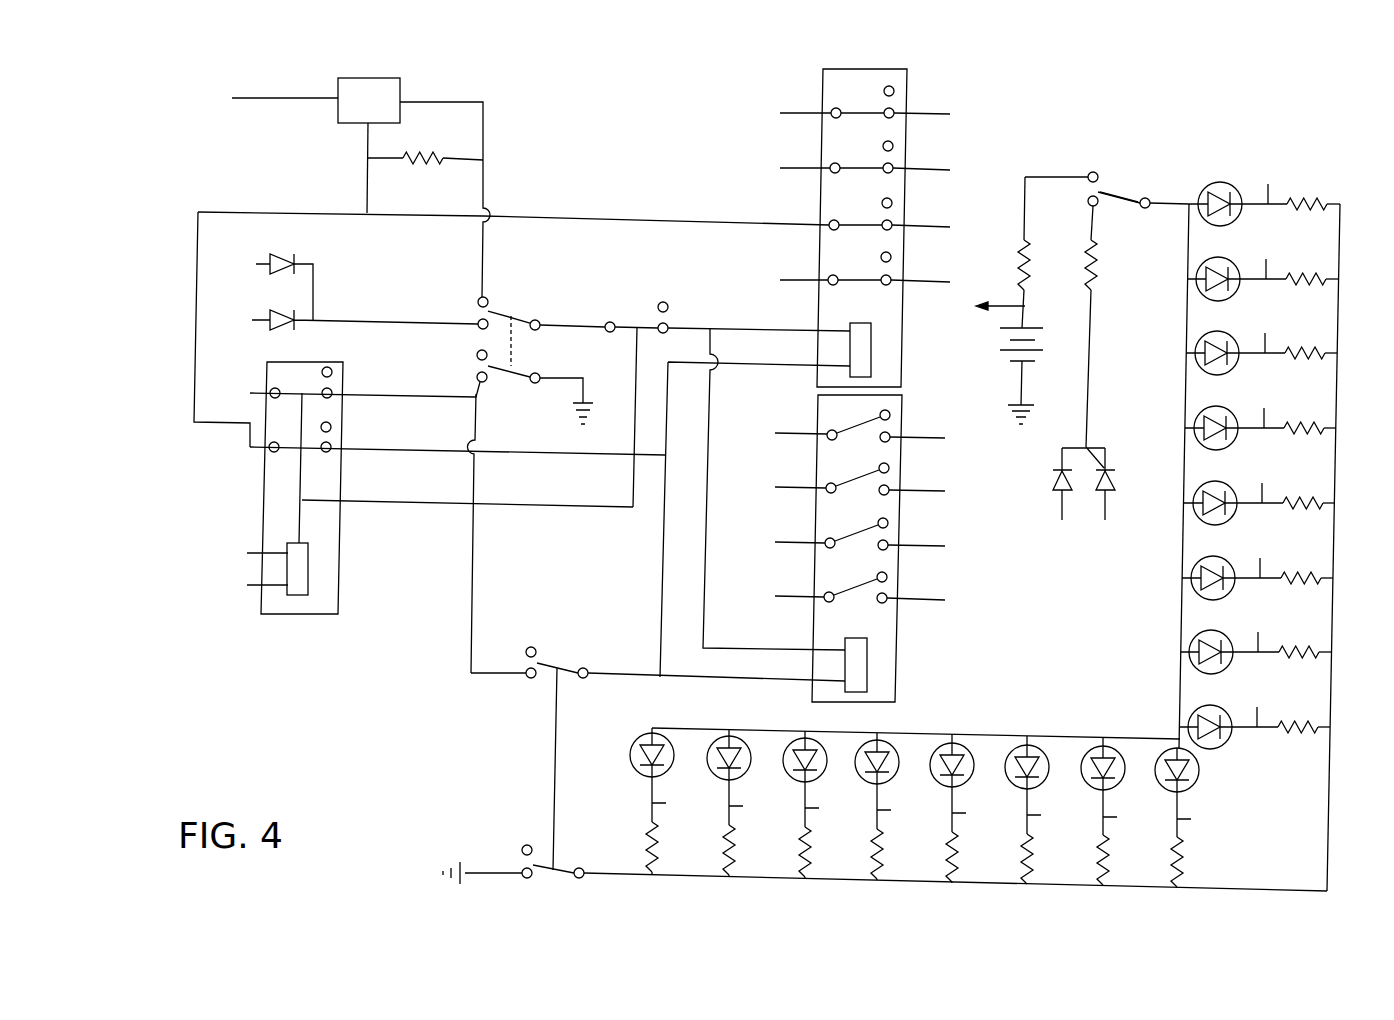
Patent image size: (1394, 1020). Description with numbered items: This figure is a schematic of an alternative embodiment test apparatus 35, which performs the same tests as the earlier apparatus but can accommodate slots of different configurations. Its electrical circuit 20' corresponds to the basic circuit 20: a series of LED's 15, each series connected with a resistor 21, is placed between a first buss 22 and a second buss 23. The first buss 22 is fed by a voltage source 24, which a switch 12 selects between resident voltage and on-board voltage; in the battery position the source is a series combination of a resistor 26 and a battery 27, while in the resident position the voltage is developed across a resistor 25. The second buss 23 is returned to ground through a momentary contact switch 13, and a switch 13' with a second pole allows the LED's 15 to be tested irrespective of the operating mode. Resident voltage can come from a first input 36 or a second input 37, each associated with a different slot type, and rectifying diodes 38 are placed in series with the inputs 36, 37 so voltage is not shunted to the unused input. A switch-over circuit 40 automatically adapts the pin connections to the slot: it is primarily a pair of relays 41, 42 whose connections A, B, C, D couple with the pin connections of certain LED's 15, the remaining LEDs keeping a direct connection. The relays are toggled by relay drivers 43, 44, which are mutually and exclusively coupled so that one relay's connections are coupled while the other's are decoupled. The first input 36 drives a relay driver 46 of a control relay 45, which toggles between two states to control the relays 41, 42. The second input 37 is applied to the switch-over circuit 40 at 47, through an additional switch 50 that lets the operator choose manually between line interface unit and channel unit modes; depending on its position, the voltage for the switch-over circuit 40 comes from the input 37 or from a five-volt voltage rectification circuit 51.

The voltage rectification circuit 51 is at (400, 98).
The switch-over circuit 40 is at (654, 262).
The input to the switch-over circuit 47 is at (256, 314).
The switch 50 is at (505, 312).
The control relay 45 is at (338, 541).
The relay driver 46 is at (308, 590).
The relay 41 is at (830, 197).
The relay driver 43 is at (855, 353).
The relay 42 is at (818, 425).
The relay driver 44 is at (855, 668).
The test apparatus 35 is at (1032, 123).
The voltage source 24 is at (1167, 195).
The switch 12 is at (1112, 195).
The resistor 26 is at (1028, 262).
The resistor 25 is at (1092, 288).
The battery 27 is at (1043, 350).
The rectifying diodes 38 is at (1062, 448).
The first input 36 is at (1060, 517).
The second input 37 is at (1106, 512).
The electrical circuit 20' is at (996, 547).
The circuit 20 is at (996, 547).
The LED's 15 is at (940, 497).
The first buss 22 is at (640, 745).
The resistor 21 is at (1326, 355).
The second buss 23 is at (1258, 885).
The switch 13' is at (632, 765).
The momentary contact switch 13 is at (632, 765).